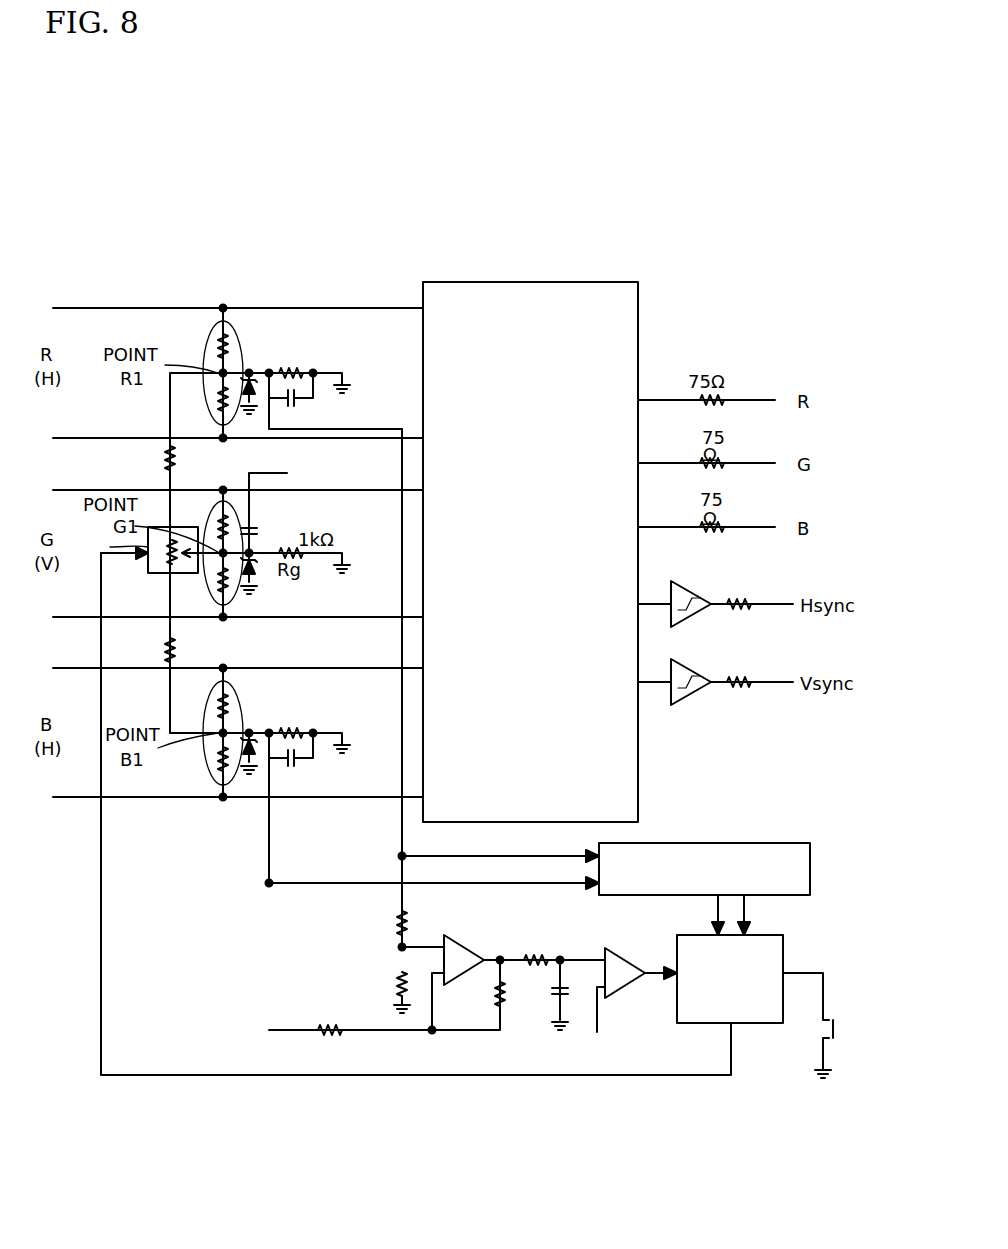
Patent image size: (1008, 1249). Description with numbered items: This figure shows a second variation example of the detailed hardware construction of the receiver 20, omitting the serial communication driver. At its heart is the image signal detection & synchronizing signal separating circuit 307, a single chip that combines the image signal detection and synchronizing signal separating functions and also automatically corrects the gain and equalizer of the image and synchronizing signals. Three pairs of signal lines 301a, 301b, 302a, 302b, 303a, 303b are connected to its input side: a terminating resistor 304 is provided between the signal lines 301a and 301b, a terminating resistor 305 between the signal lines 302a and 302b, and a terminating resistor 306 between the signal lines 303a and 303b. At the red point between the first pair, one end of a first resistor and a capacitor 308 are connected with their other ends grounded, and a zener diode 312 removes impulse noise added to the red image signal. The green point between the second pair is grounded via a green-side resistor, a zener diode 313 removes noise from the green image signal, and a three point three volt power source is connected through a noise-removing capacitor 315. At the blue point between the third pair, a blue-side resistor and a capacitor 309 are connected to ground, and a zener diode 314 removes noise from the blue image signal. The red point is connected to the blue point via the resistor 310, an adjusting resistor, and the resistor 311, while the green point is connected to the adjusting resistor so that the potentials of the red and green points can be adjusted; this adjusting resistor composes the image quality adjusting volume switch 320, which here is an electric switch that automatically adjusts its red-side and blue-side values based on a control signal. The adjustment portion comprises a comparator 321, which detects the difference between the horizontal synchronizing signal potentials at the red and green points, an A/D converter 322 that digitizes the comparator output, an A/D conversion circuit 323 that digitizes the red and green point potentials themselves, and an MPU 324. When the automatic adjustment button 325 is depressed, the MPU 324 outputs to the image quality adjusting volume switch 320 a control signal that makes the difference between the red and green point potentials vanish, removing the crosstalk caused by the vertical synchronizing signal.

The receiver 20 is at (412, 204).
The signal line 301a is at (375, 293).
The signal line 301b is at (370, 436).
The signal line 302a is at (368, 489).
The signal line 302b is at (367, 616).
The signal line 303a is at (367, 667).
The signal line 303b is at (373, 815).
The terminating resistor 304 is at (210, 334).
The terminating resistor 305 is at (232, 602).
The terminating resistor 306 is at (212, 782).
The image signal detection & synchronizing signal separating circuit 307 is at (512, 281).
The capacitor 308 is at (296, 422).
The capacitor 309 is at (300, 792).
The resistor 310 is at (166, 459).
The resistor 311 is at (166, 646).
The zener diode 312 is at (251, 367).
The zener diode 313 is at (256, 576).
The zener diode 314 is at (252, 724).
The capacitor 315 is at (254, 528).
The image quality adjusting volume switch 320 is at (142, 569).
The comparator 321 is at (468, 944).
The A/D converter 322 is at (625, 957).
The A/D conversion circuit 323 is at (810, 866).
The MPU 324 is at (783, 943).
The automatic adjustment button 325 is at (836, 1031).